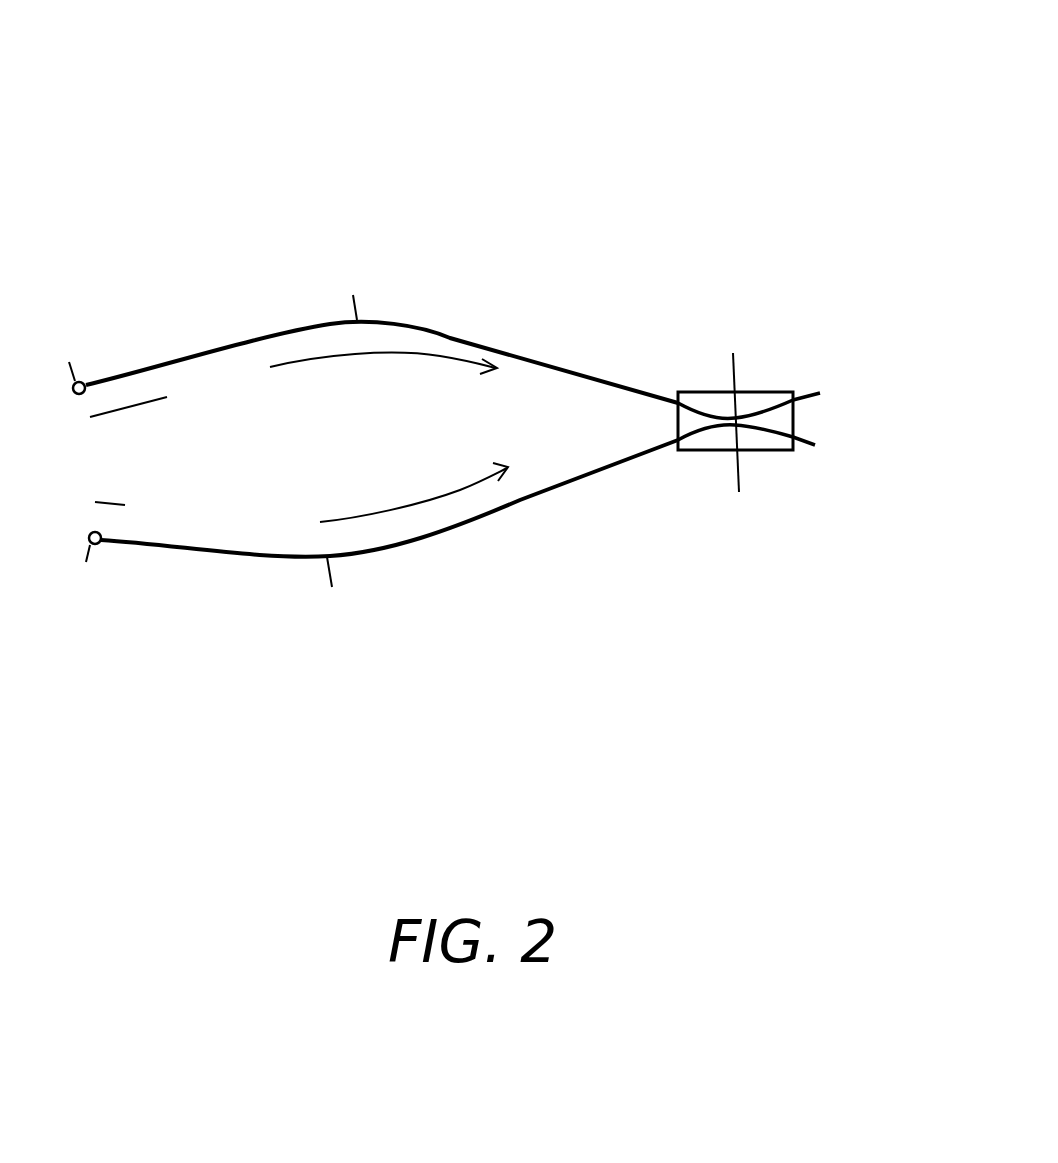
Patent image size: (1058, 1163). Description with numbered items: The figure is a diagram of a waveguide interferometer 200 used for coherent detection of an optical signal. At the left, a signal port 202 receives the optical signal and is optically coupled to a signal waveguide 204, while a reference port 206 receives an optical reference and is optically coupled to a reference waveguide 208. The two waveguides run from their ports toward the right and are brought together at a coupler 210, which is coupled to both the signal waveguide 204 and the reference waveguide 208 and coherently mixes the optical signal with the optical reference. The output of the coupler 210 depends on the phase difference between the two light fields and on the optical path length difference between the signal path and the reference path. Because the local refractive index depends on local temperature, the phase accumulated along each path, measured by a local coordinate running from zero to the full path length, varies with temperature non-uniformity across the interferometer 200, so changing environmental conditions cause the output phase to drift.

The waveguide interferometer 200 is at (520, 80).
The signal port 202 is at (80, 382).
The signal waveguide 204 is at (567, 365).
The reference port 206 is at (97, 545).
The reference waveguide 208 is at (515, 502).
The coupler 210 is at (793, 390).